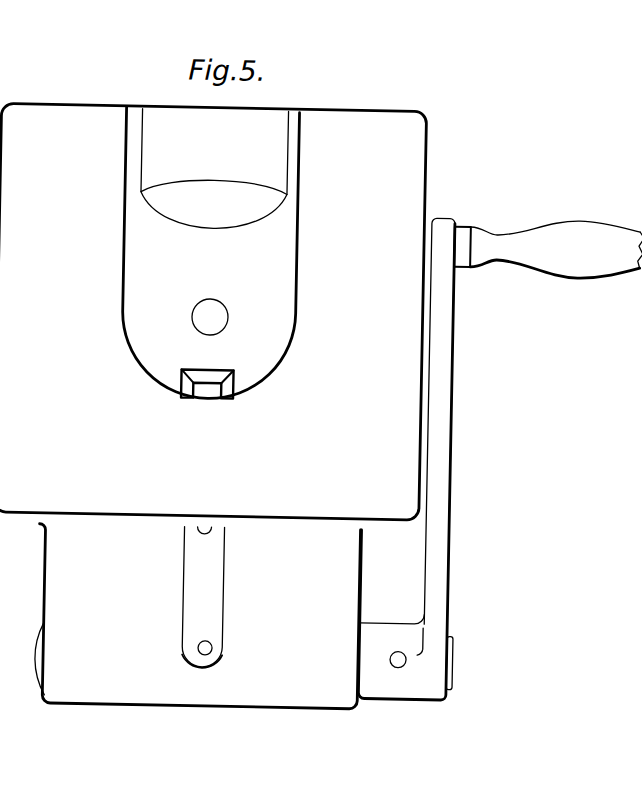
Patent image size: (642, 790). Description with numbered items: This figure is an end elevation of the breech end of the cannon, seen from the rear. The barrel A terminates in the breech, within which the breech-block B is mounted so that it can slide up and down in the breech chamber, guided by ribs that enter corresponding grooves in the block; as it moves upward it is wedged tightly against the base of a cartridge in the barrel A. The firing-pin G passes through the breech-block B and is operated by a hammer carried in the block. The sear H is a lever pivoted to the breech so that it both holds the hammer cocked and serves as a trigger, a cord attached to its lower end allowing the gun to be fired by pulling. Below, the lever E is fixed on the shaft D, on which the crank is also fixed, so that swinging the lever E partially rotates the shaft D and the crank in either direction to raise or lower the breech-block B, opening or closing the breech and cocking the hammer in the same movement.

The barrel A is at (214, 169).
The breech-block B is at (210, 253).
The firing-pin G is at (210, 317).
The sear H is at (203, 598).
The lever E is at (406, 458).
The shaft D is at (458, 656).